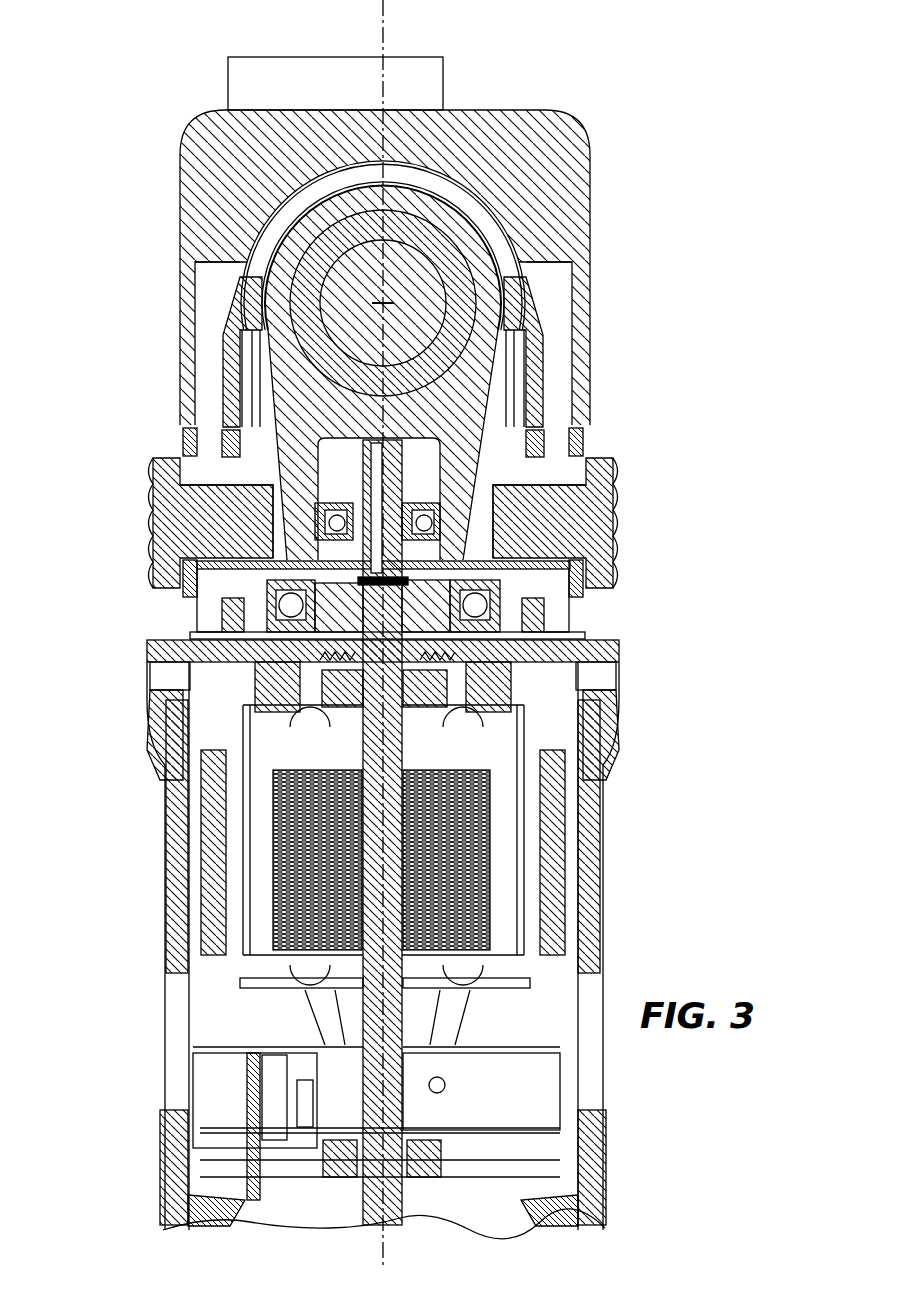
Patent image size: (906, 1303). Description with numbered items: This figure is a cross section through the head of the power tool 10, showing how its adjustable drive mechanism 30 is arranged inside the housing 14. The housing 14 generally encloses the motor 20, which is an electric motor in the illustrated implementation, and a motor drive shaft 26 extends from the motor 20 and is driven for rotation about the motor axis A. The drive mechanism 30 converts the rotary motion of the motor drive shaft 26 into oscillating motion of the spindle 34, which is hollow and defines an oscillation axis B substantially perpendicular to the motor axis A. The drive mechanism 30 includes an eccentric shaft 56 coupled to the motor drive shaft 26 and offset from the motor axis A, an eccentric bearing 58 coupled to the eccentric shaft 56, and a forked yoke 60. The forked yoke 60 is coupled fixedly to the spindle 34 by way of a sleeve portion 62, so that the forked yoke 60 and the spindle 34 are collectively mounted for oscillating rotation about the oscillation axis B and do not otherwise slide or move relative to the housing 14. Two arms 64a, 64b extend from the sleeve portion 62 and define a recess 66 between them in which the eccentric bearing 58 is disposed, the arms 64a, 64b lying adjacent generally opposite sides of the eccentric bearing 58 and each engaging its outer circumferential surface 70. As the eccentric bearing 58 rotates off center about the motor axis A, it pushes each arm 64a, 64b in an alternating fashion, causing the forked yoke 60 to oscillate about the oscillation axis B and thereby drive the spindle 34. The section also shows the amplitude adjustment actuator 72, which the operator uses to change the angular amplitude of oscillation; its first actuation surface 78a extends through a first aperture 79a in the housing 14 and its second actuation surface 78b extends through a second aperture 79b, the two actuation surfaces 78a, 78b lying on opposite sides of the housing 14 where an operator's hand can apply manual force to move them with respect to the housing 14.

The power tool 10 is at (608, 102).
The housing 14 is at (160, 848).
The motor 20 is at (478, 858).
The motor drive shaft 26 is at (308, 647).
The drive mechanism 30 is at (583, 583).
The spindle 34 is at (408, 232).
The eccentric shaft 56 is at (278, 630).
The eccentric bearing 58 is at (270, 592).
The forked yoke 60 is at (268, 370).
The sleeve portion 62 is at (285, 236).
The arm 64a is at (490, 446).
The arm 64b is at (270, 447).
The recess 66 is at (421, 456).
The outer circumferential surface 70 is at (234, 552).
The amplitude adjustment actuator 72 is at (615, 537).
The first actuation surface 78a is at (625, 505).
The second actuation surface 78b is at (148, 540).
The first aperture 79a is at (552, 494).
The second aperture 79b is at (215, 535).
The motor axis A is at (381, 38).
The oscillation axis B is at (470, 340).